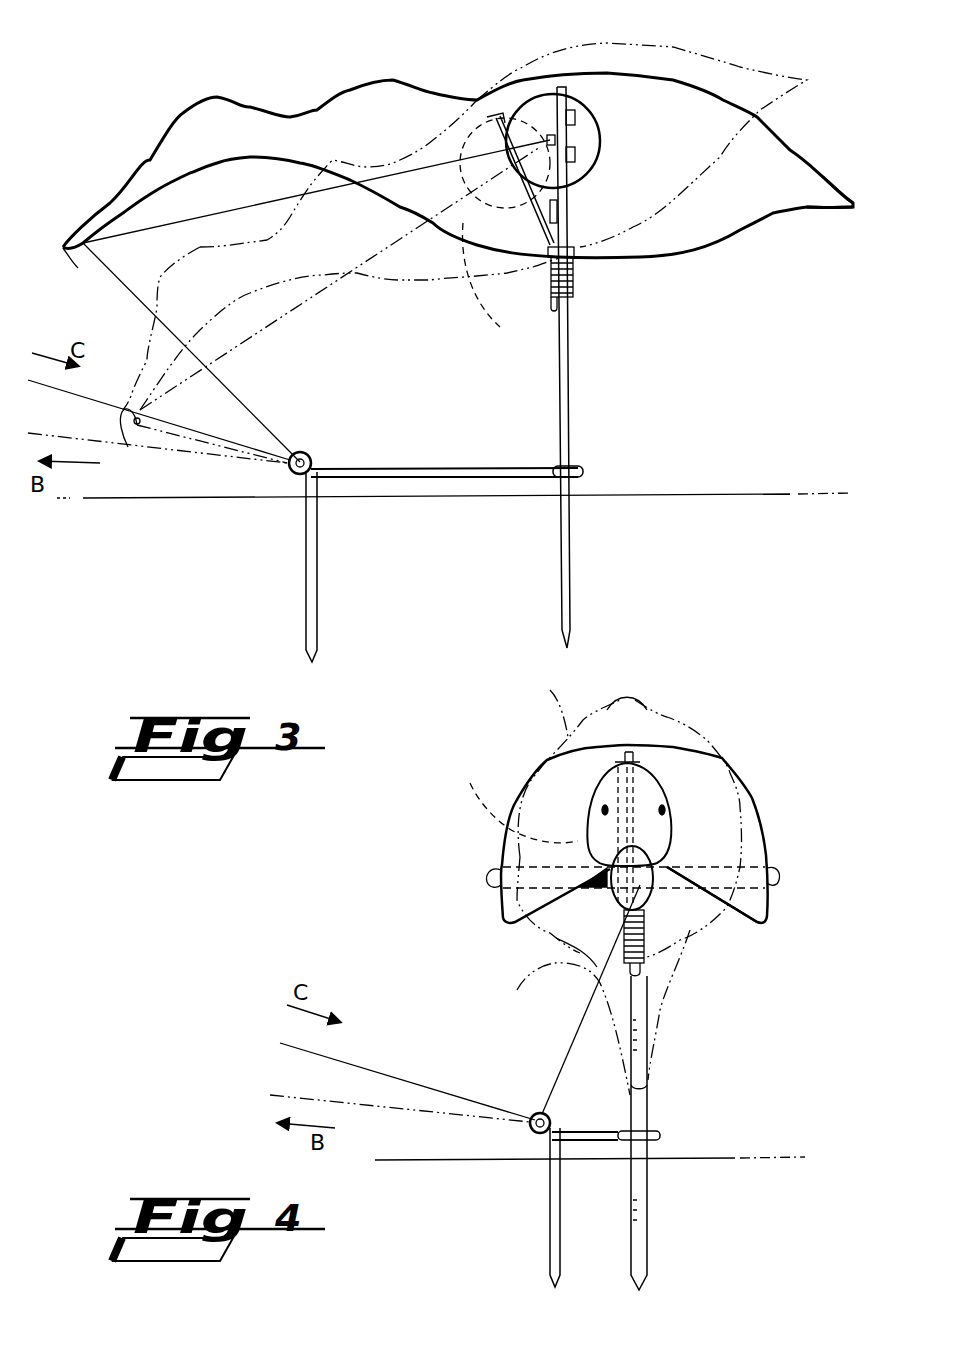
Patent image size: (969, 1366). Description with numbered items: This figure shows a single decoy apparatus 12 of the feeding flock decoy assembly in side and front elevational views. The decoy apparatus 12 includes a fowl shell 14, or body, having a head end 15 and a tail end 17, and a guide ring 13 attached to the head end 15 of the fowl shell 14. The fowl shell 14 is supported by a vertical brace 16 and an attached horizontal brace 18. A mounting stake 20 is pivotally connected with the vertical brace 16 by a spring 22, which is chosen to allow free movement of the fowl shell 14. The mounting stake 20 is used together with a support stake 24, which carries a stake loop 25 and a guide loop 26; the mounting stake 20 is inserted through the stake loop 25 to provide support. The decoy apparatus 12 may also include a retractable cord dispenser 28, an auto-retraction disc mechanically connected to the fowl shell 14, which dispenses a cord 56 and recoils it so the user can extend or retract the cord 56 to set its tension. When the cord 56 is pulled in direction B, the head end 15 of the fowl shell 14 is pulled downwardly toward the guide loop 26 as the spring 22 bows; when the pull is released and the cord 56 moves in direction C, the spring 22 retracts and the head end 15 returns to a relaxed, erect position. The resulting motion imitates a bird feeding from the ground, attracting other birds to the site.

In FIG. 3, the decoy apparatus 12 is at (240, 45).
In FIG. 4, the decoy apparatus 12 is at (805, 748).
In FIG. 3, the guide ring 13 is at (78, 250).
In FIG. 3, the fowl shell 14 is at (237, 140).
In FIG. 4, the fowl shell 14 is at (550, 690).
In FIG. 3, the head end 15 is at (80, 218).
In FIG. 4, the head end 15 is at (575, 999).
In FIG. 3, the vertical brace 16 is at (512, 97).
In FIG. 4, the vertical brace 16 is at (660, 740).
In FIG. 3, the tail end 17 is at (837, 163).
In FIG. 4, the horizontal brace 18 is at (777, 880).
In FIG. 3, the mounting stake 20 is at (567, 367).
In FIG. 4, the mounting stake 20 is at (650, 1180).
In FIG. 3, the spring 22 is at (573, 277).
In FIG. 4, the spring 22 is at (645, 942).
In FIG. 3, the support stake 24 is at (393, 467).
In FIG. 4, the support stake 24 is at (585, 1136).
In FIG. 3, the stake loop 25 is at (580, 478).
In FIG. 4, the stake loop 25 is at (655, 1130).
In FIG. 3, the guide loop 26 is at (317, 453).
In FIG. 4, the guide loop 26 is at (545, 1112).
In FIG. 3, the retractable cord dispenser 28 is at (587, 130).
In FIG. 4, the retractable cord dispenser 28 is at (561, 831).
In FIG. 3, the cord 56 is at (97, 403).
In FIG. 4, the cord 56 is at (397, 1068).